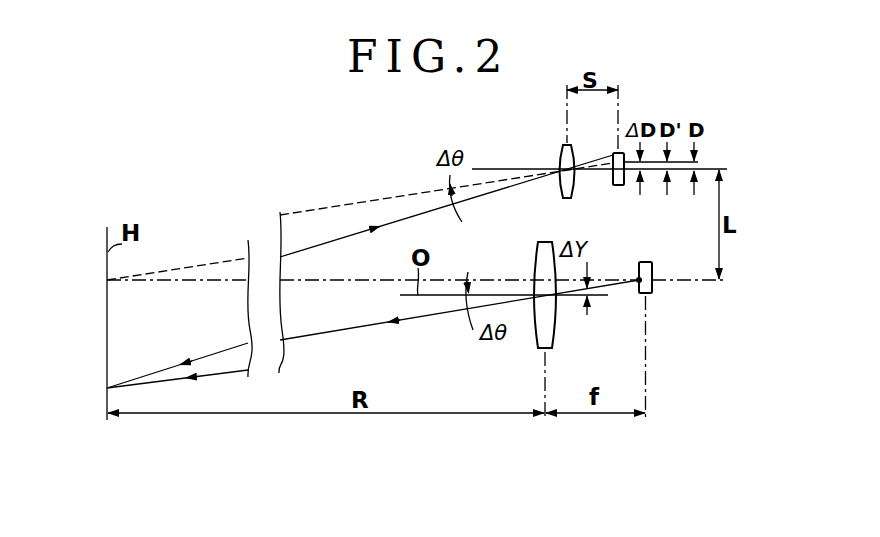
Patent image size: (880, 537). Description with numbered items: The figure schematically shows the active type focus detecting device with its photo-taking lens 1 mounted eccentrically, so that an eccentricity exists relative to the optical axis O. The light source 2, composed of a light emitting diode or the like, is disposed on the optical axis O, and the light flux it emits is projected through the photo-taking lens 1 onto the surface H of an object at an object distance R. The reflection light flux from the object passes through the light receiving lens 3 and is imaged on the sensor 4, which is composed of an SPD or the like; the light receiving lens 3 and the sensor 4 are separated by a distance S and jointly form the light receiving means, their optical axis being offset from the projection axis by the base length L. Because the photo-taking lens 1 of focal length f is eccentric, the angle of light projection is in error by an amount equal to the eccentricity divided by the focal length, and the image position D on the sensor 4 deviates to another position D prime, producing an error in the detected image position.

The photo-taking lens 1 is at (538, 349).
The light source 2 is at (647, 294).
The light receiving lens 3 is at (561, 145).
The sensor 4 is at (618, 153).